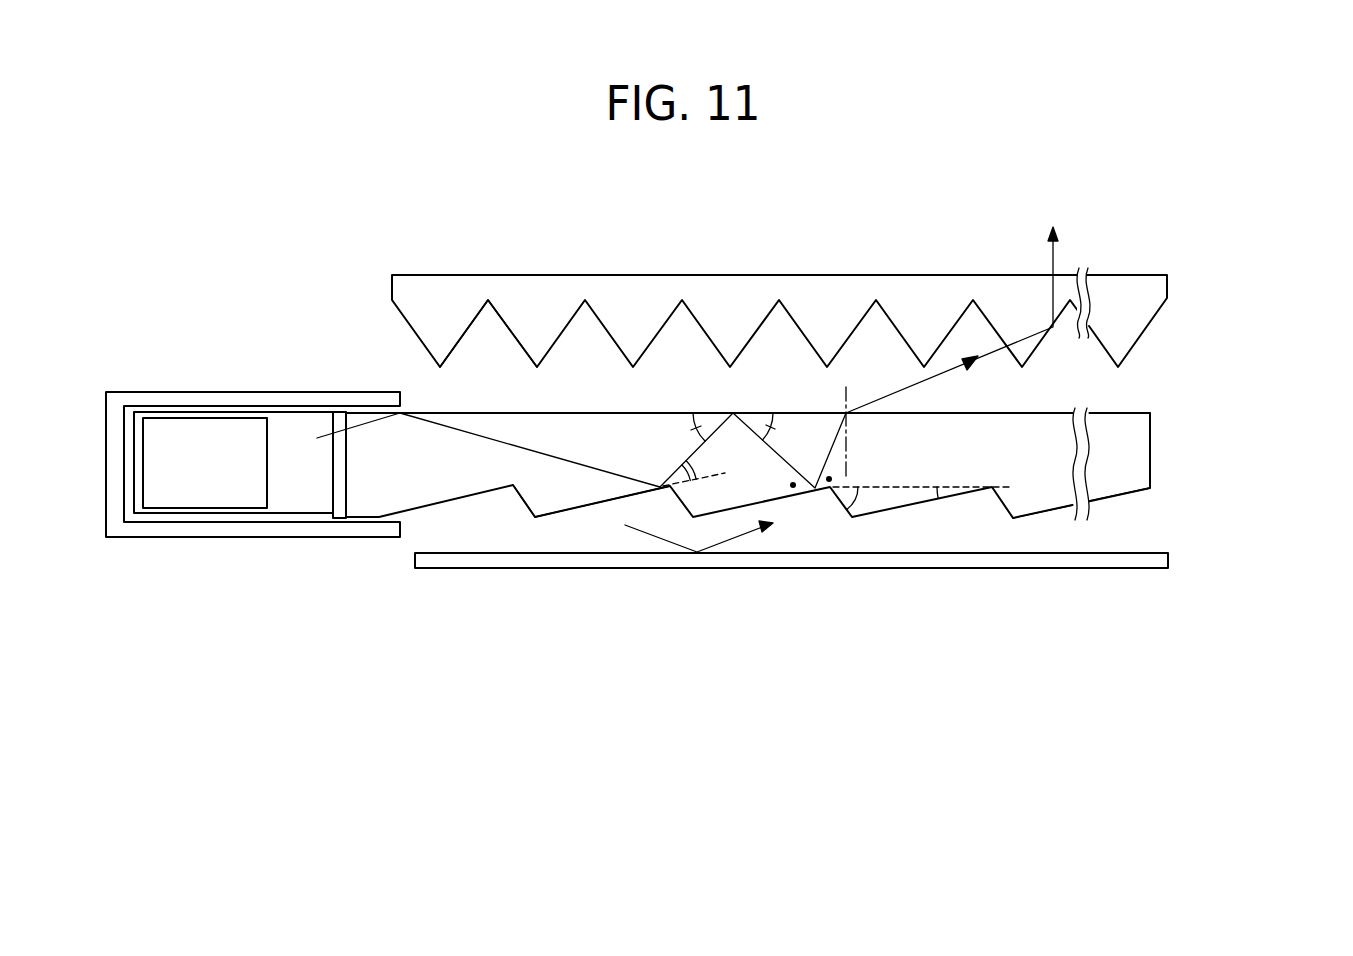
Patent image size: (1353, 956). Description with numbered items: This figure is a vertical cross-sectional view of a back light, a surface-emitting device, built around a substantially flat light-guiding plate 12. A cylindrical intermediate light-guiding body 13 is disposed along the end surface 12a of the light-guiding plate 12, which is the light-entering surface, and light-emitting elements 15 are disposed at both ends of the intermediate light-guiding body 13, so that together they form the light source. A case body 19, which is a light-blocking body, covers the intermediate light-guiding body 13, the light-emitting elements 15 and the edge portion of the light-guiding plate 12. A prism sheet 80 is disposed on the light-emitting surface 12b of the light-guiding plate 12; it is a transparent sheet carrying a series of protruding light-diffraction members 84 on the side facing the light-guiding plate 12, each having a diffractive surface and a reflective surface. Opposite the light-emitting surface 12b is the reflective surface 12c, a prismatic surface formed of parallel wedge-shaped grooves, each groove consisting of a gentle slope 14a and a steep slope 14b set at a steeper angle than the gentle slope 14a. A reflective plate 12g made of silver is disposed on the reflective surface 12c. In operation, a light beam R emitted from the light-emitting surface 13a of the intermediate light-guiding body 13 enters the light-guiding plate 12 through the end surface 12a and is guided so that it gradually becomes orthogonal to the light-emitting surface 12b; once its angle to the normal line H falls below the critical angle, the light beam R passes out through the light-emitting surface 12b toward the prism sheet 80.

The light-guiding plate 12 is at (1157, 452).
The end surface 12a is at (340, 460).
The light-emitting surface 12b is at (1053, 412).
The reflective surface 12c is at (1123, 493).
The reflective plate 12g is at (1172, 567).
The intermediate light-guiding body 13 is at (275, 487).
The light-emitting surface 13a is at (336, 490).
The gentle slope 14a is at (565, 510).
The steep slope 14b is at (522, 500).
The light-emitting element 15 is at (180, 497).
The case body 19 is at (133, 400).
The prism sheet 80 is at (1172, 288).
The light-diffraction member 84 is at (537, 365).
The light beam R is at (563, 461).
The normal line H is at (864, 418).